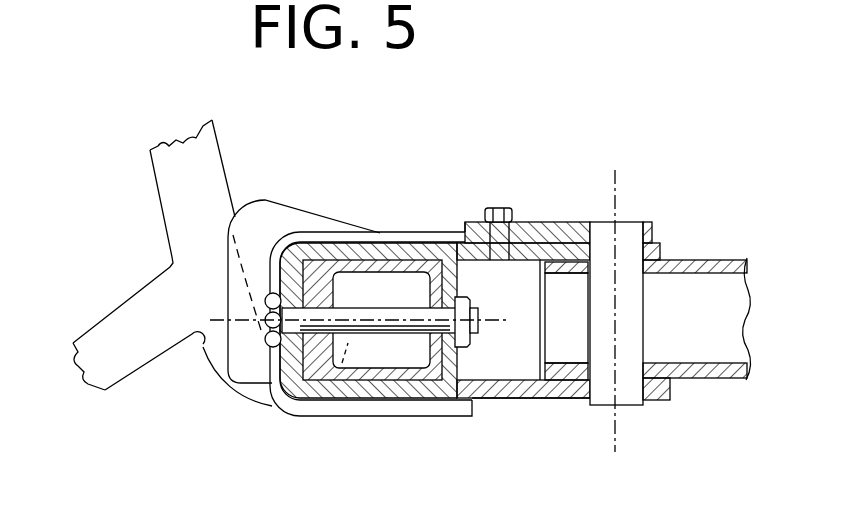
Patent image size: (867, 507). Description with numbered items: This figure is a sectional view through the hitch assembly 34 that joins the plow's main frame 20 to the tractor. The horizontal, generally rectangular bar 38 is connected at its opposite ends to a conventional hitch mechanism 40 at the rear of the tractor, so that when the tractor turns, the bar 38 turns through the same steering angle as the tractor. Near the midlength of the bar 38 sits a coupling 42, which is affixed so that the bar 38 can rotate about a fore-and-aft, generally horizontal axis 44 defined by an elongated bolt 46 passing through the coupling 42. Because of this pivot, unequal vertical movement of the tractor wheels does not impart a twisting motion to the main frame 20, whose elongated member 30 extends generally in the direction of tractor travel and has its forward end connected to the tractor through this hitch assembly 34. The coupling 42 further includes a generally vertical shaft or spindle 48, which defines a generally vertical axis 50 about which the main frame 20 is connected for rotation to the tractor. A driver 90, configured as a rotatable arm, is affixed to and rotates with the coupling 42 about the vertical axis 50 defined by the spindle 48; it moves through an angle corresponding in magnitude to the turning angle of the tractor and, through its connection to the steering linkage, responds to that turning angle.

The main frame 20 is at (699, 386).
The elongated member 30 is at (715, 265).
The hitch assembly 34 is at (418, 182).
The horizontal generally rectangular bar 38 is at (376, 268).
The hitch mechanism 40 is at (148, 229).
The coupling 42 is at (431, 230).
The fore-and-aft generally horizontal axis 44 is at (203, 344).
The elongated bolt 46 is at (272, 407).
The vertical shaft or spindle 48 is at (630, 236).
The generally vertical axis 50 is at (615, 190).
The driver 90 is at (548, 228).